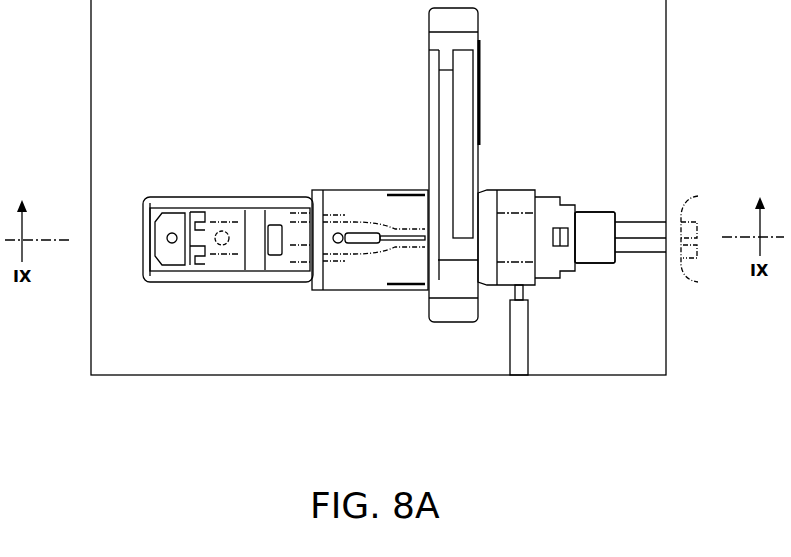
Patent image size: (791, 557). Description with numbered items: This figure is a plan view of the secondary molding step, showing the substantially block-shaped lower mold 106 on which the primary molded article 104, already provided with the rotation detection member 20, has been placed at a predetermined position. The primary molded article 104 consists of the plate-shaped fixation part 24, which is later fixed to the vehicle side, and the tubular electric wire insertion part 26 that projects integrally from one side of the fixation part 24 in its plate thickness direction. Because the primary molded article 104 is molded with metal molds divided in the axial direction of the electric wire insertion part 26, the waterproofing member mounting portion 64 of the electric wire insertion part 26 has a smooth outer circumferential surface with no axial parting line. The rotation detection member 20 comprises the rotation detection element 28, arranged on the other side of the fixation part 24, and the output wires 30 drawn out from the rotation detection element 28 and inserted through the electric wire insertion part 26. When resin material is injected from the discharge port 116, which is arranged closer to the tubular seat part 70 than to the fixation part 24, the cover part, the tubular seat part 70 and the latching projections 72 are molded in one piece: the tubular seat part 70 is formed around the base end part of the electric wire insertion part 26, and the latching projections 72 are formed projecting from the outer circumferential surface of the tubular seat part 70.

The rotation detection member 20 is at (360, 156).
The fixation part 24 is at (465, 122).
The electric wire insertion part 26 is at (592, 232).
The waterproofing member mounting portion 64 is at (595, 237).
The rotation detection element 28 is at (261, 195).
The output wires 30 is at (704, 239).
The tubular seat part 70 is at (510, 185).
The latching projections 72 is at (558, 226).
The primary molded article 104 is at (495, 165).
The lower mold 106 is at (648, 95).
The discharge port 116 is at (525, 355).